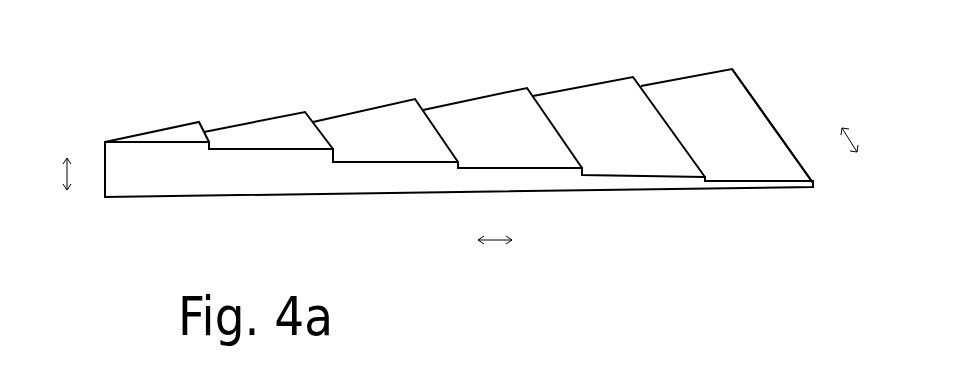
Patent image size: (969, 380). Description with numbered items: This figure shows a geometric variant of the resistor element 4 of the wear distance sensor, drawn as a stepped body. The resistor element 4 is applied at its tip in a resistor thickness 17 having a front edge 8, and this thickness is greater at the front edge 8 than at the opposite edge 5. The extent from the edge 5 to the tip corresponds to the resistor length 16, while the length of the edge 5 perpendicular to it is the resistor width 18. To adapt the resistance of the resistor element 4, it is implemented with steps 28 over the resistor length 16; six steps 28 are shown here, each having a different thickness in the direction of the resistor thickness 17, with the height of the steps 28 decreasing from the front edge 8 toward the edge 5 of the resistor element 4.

The resistor element 4 is at (422, 180).
The steps 28 is at (185, 130).
The edge 5 is at (760, 103).
The front edge 8 is at (102, 177).
The resistor thickness 17 is at (63, 170).
The resistor width 18 is at (850, 138).
The resistor length 16 is at (493, 245).